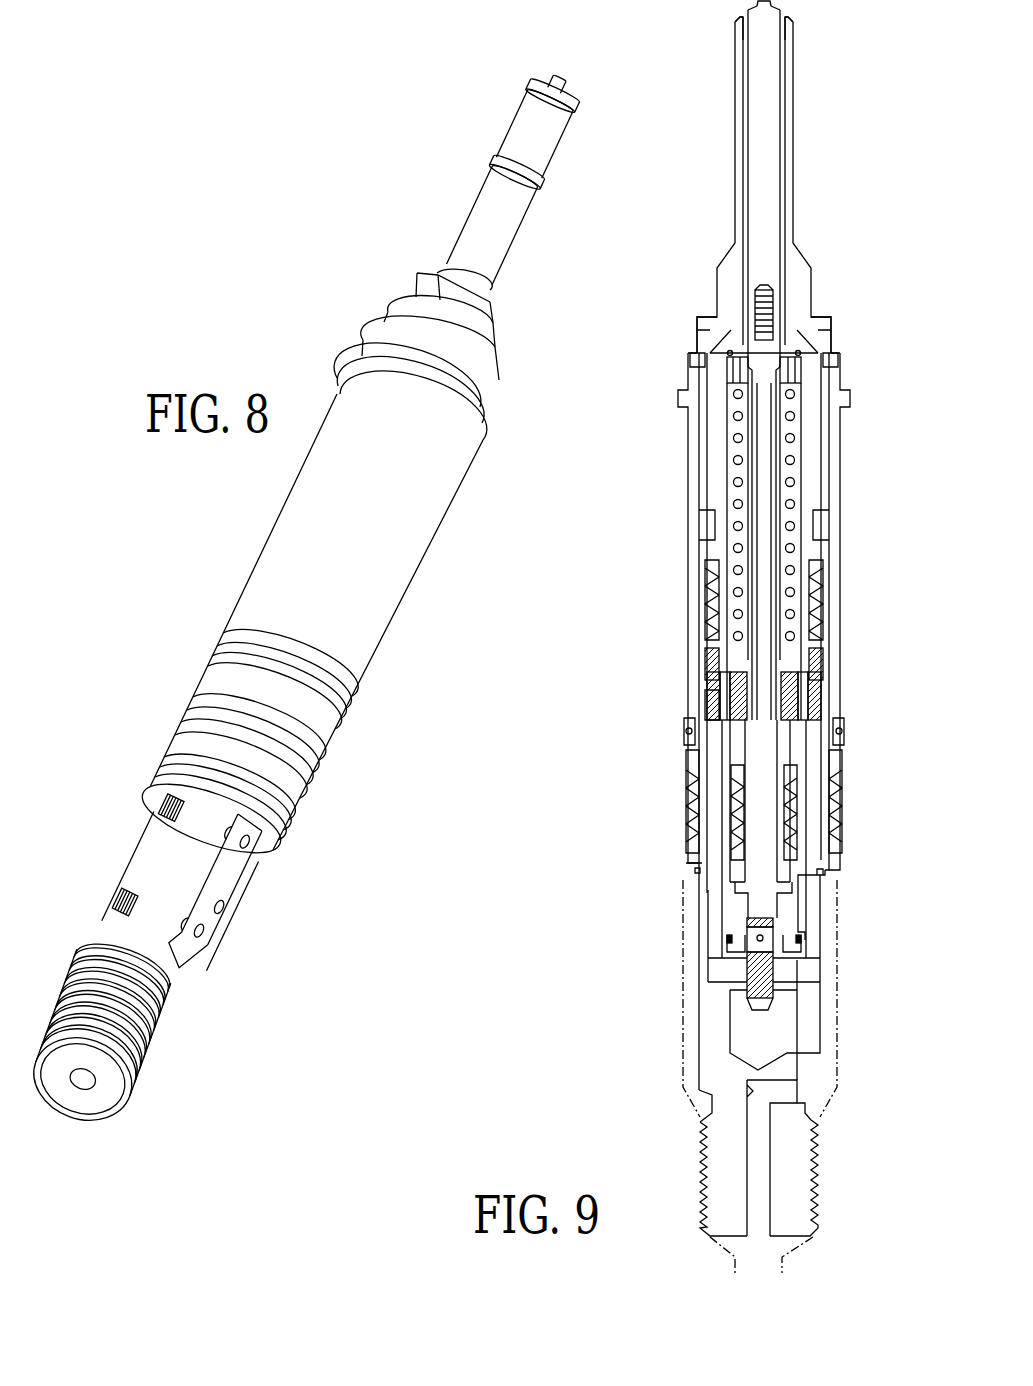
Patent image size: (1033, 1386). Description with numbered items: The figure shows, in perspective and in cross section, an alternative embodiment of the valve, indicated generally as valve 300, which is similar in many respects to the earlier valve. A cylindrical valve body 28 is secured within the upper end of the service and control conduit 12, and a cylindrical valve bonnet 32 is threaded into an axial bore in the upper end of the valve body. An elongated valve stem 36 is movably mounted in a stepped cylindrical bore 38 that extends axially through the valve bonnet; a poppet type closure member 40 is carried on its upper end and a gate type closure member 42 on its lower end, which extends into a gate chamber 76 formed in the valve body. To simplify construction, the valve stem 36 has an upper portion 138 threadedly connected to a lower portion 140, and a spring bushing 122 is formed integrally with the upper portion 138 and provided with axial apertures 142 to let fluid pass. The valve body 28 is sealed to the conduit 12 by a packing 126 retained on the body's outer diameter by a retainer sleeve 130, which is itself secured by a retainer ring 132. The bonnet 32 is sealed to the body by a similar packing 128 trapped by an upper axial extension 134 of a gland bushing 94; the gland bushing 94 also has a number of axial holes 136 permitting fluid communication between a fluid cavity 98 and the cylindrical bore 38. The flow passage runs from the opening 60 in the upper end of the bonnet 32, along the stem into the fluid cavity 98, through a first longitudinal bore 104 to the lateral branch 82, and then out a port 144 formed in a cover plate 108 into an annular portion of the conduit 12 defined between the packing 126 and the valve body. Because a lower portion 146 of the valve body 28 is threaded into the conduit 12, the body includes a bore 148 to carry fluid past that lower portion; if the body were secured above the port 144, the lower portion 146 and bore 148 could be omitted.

In FIG. 9, the service and control conduit 12 is at (725, 1253).
In FIG. 8, the valve body 28 is at (268, 534).
In FIG. 9, the valve body 28 is at (842, 587).
In FIG. 8, the valve bonnet 32 is at (437, 250).
In FIG. 9, the valve bonnet 32 is at (841, 338).
In FIG. 9, the valve stem 36 is at (783, 306).
In FIG. 9, the stepped cylindrical bore 38 is at (712, 343).
In FIG. 9, the poppet type closure member 40 is at (785, 11).
In FIG. 9, the gate type closure member 42 is at (725, 995).
In FIG. 9, the opening 60 is at (740, 27).
In FIG. 9, the gate chamber 76 is at (735, 1043).
In FIG. 9, the lateral branch 82 is at (727, 978).
In FIG. 9, the gland bushing 94 is at (700, 682).
In FIG. 9, the fluid cavity 98 is at (700, 702).
In FIG. 9, the first longitudinal bore 104 is at (712, 900).
In FIG. 8, the cover plate 108 is at (247, 880).
In FIG. 9, the cover plate 108 is at (822, 1030).
In FIG. 9, the spring bushing 122 is at (728, 372).
In FIG. 9, the packing 126 is at (688, 797).
In FIG. 9, the packing 128 is at (705, 596).
In FIG. 9, the retainer sleeve 130 is at (835, 843).
In FIG. 9, the retainer ring 132 is at (822, 872).
In FIG. 9, the upper axial extension 134 is at (703, 661).
In FIG. 9, the axial holes 136 is at (797, 703).
In FIG. 9, the upper portion 138 is at (763, 201).
In FIG. 9, the lower portion 140 is at (760, 509).
In FIG. 9, the axial apertures 142 is at (821, 330).
In FIG. 8, the port 144 is at (235, 916).
In FIG. 9, the port 144 is at (805, 975).
In FIG. 8, the lower portion 146 is at (160, 1050).
In FIG. 9, the lower portion 146 is at (700, 1153).
In FIG. 9, the bore 148 is at (765, 1190).
In FIG. 8, the valve 300 is at (334, 271).
In FIG. 9, the valve 300 is at (707, 188).